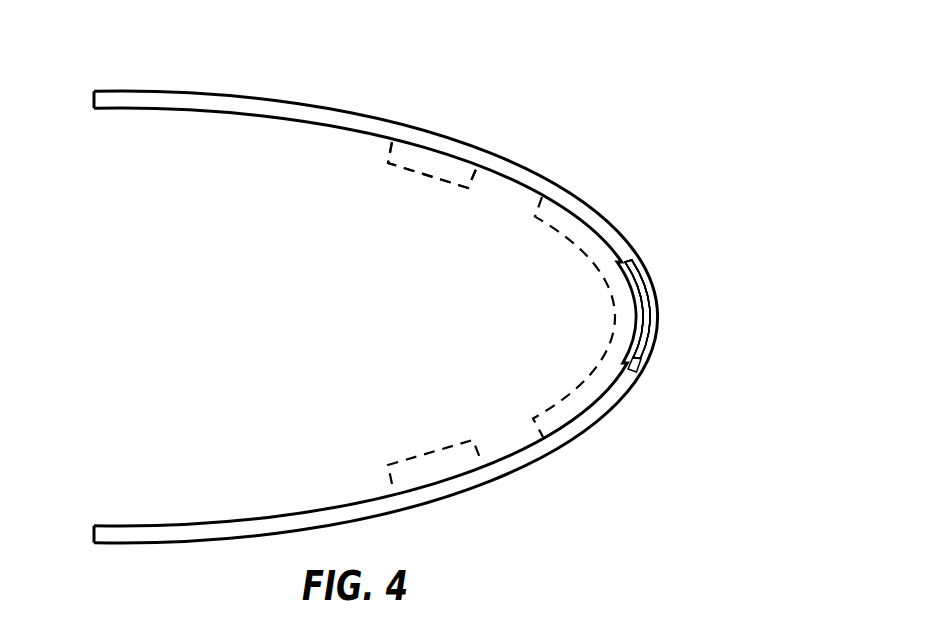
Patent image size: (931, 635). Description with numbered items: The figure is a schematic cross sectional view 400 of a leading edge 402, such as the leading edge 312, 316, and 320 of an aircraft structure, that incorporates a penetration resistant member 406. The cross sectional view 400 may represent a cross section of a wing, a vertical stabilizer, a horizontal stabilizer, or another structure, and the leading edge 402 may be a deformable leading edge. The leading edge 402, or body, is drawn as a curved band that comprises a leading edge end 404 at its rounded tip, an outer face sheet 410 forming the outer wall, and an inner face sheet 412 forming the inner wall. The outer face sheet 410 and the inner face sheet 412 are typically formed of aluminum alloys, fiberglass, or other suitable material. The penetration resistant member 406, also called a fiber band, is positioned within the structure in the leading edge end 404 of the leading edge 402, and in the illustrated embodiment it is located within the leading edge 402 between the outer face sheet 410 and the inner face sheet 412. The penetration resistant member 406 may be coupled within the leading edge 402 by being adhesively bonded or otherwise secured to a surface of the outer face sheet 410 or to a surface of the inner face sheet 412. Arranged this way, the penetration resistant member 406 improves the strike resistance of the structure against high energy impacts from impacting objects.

The cross sectional view 400 is at (619, 97).
The leading edge 402 is at (299, 98).
The leading edge end 404 is at (664, 337).
The penetration resistant member 406 is at (450, 170).
The outer face sheet 410 is at (432, 134).
The inner face sheet 412 is at (387, 143).
The leading edge 312 is at (747, 257).
The leading edge 316 is at (726, 291).
The leading edge 320 is at (726, 291).